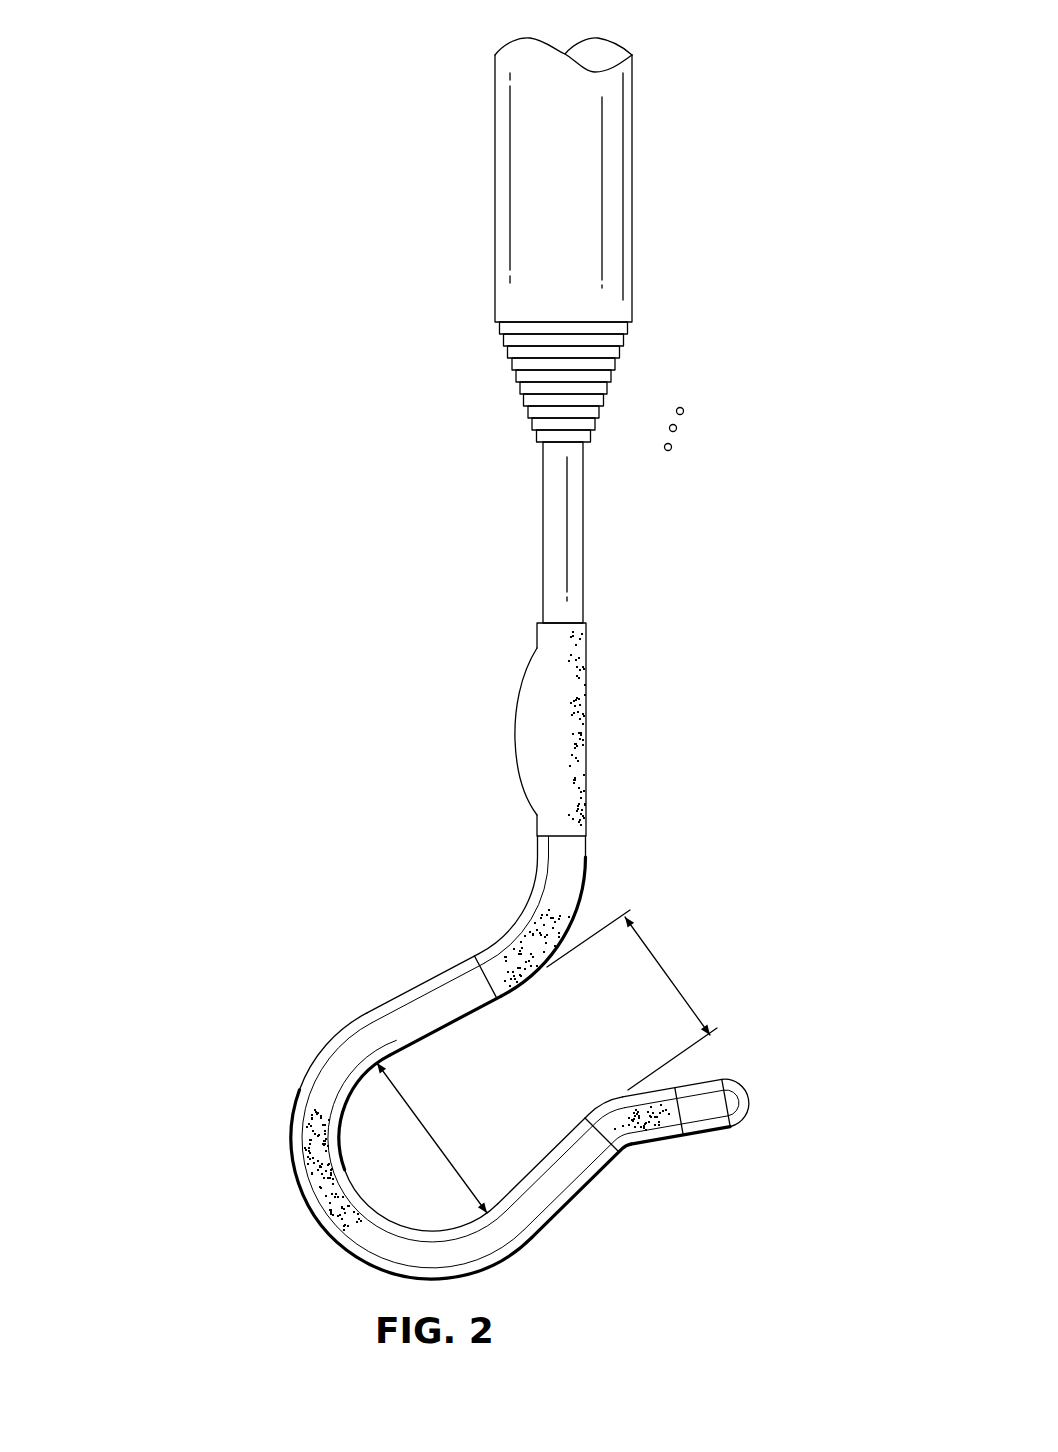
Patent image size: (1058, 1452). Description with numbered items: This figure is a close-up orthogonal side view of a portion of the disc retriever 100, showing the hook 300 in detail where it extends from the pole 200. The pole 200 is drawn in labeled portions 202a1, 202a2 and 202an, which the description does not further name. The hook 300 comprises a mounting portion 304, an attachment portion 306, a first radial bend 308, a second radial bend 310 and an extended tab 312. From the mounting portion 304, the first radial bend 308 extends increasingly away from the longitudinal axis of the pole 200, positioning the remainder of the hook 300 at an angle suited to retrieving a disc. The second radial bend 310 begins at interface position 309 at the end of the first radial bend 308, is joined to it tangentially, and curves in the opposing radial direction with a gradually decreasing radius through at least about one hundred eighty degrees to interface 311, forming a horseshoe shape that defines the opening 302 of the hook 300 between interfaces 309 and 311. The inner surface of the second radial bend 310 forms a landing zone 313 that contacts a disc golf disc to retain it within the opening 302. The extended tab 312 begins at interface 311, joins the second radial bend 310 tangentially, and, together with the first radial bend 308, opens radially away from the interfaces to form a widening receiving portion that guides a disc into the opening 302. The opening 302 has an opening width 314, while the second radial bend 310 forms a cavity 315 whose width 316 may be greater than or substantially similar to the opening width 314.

The disc retriever 100 is at (481, 658).
The pole 200 is at (562, 330).
The first segment 202a1 is at (495, 292).
The second segment 202a2 is at (632, 325).
The nth segment 202an is at (582, 532).
The hook 300 is at (482, 951).
The opening 302 is at (482, 1094).
The mounting portion 304 is at (554, 729).
The attachment portion 306 is at (523, 742).
The first radial bend 308 is at (518, 916).
The interface position 309 is at (487, 977).
The second radial bend 310 is at (373, 1134).
The interface 311 is at (601, 1147).
The extended tab 312 is at (660, 1134).
The landing zone 313 is at (438, 1035).
The opening width 314 is at (673, 980).
The cavity 315 is at (361, 1100).
The width 316 is at (477, 1147).